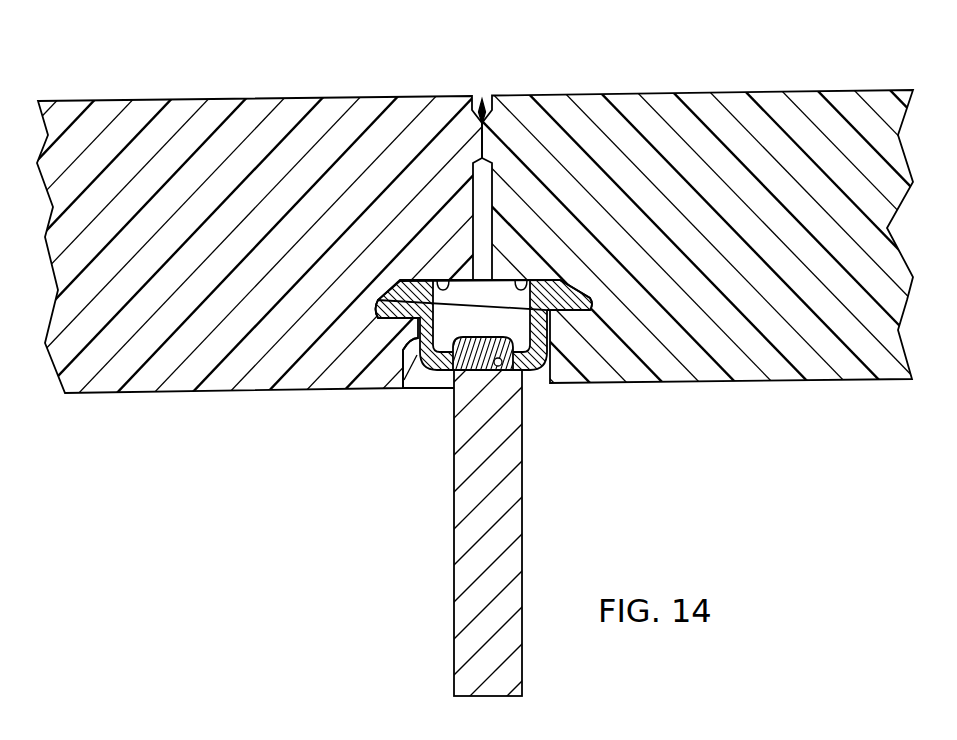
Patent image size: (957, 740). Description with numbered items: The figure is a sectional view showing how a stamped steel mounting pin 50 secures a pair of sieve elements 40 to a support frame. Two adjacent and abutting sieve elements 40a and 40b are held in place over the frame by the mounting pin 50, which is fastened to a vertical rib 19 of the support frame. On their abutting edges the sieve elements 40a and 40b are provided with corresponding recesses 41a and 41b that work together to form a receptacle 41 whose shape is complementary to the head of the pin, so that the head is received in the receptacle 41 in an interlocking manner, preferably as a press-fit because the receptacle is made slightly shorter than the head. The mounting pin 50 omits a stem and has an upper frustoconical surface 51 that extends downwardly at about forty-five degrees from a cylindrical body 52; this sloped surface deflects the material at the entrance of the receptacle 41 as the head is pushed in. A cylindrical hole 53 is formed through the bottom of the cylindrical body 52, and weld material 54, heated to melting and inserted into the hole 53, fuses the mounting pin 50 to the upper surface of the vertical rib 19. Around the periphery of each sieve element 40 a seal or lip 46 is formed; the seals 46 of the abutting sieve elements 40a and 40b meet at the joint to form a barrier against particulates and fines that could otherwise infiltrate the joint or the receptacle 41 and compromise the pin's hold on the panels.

The sieve element 40 is at (478, 212).
The sieve element 40a is at (154, 100).
The sieve element 40b is at (760, 90).
The seal 46 is at (482, 98).
The mounting pin 50 is at (388, 287).
The upper frustoconical surface 51 is at (593, 298).
The receptacle 41 is at (433, 396).
The recess 41a is at (441, 281).
The recess 41b is at (523, 281).
The weld material 54 is at (483, 336).
The hole 53 is at (501, 370).
The cylindrical body 52 is at (409, 371).
The vertical rib 19 is at (455, 595).